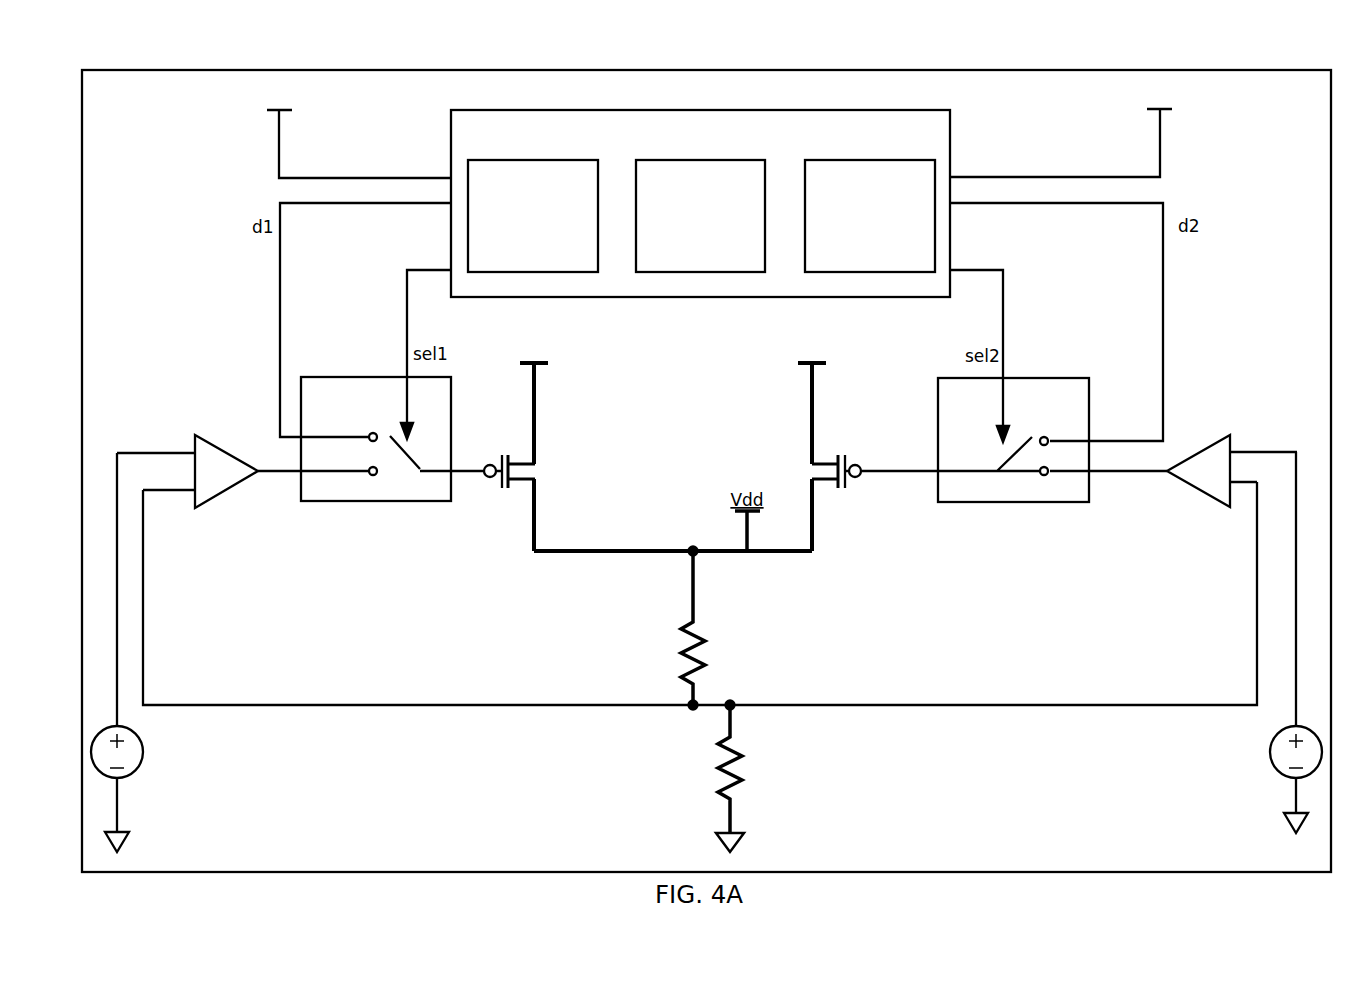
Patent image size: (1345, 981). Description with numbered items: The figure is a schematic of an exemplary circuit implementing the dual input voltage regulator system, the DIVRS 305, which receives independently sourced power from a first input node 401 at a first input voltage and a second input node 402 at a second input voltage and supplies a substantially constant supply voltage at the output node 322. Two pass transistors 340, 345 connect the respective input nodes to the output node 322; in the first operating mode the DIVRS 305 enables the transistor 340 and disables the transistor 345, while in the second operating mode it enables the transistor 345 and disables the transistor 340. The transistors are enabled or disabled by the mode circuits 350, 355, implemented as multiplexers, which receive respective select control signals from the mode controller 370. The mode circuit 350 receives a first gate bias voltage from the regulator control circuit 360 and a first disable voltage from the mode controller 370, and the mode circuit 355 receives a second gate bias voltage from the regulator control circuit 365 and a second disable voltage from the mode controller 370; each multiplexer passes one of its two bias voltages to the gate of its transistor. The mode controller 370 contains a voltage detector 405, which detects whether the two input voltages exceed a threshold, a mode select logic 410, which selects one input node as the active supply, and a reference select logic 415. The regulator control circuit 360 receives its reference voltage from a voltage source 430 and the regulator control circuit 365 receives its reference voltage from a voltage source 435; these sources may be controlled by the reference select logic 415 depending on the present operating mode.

The DIVRS 305 is at (706, 471).
The mode controller 370 is at (700, 203).
The voltage detector 405 is at (533, 216).
The mode select logic 410 is at (700, 216).
The reference select logic 415 is at (870, 216).
The input node 401 is at (1160, 143).
The input node 402 is at (279, 146).
The mode circuit 350 is at (375, 502).
The mode circuit 355 is at (1015, 502).
The transistor 340 is at (500, 493).
The transistor 345 is at (850, 493).
The regulator control circuit 360 is at (217, 510).
The regulator control circuit 365 is at (1213, 500).
The output node 322 is at (600, 551).
The voltage source 430 is at (127, 776).
The voltage source 435 is at (1272, 766).